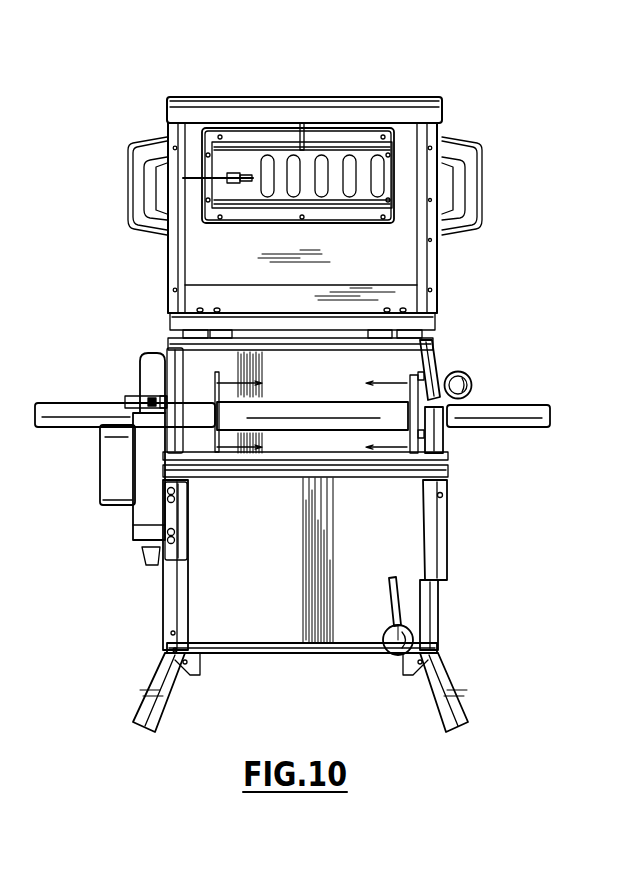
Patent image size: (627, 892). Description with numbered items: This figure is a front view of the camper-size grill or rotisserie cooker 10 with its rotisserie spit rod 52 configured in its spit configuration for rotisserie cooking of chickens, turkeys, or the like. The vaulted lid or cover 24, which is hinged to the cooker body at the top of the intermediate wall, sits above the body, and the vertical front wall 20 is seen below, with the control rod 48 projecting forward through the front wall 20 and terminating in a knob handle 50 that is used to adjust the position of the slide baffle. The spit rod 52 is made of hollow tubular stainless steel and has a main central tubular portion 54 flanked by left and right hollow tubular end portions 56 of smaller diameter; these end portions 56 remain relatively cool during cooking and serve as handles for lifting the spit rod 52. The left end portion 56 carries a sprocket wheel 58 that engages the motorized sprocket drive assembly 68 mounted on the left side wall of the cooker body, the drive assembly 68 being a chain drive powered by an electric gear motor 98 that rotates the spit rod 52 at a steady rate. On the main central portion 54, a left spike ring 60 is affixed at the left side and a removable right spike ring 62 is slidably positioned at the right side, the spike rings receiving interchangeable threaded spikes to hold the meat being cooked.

The camper-size grill or rotisserie cooker 10 is at (106, 652).
The front wall 20 is at (265, 635).
The vaulted lid or cover 24 is at (372, 112).
The control rod 48 is at (400, 600).
The knob handle 50 is at (393, 657).
The rotisserie spit rod 52 is at (418, 346).
The main central tubular portion 54 is at (347, 402).
The tubular end portions 56 is at (65, 403).
The sprocket wheel 58 is at (138, 402).
The left spike ring 60 is at (207, 445).
The removable right spike ring 62 is at (402, 453).
The motorized sprocket drive assembly 68 is at (133, 523).
The electric gear motor 98 is at (100, 460).